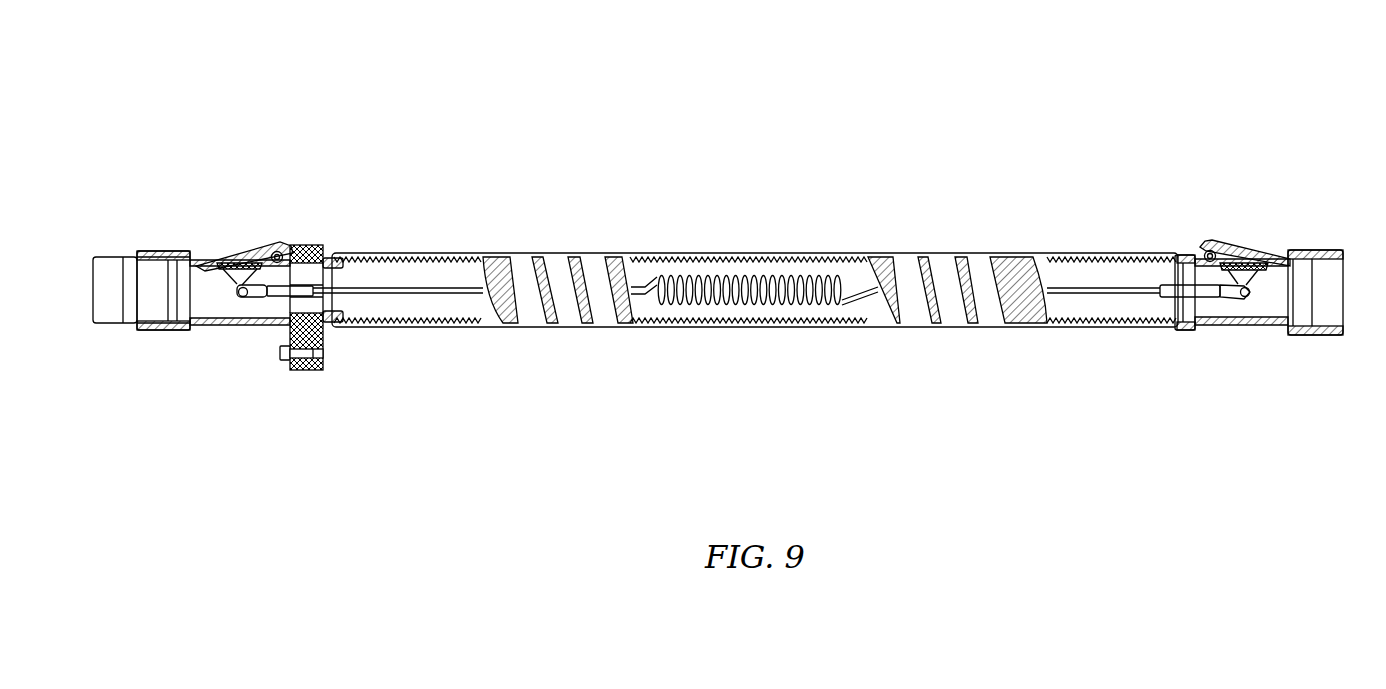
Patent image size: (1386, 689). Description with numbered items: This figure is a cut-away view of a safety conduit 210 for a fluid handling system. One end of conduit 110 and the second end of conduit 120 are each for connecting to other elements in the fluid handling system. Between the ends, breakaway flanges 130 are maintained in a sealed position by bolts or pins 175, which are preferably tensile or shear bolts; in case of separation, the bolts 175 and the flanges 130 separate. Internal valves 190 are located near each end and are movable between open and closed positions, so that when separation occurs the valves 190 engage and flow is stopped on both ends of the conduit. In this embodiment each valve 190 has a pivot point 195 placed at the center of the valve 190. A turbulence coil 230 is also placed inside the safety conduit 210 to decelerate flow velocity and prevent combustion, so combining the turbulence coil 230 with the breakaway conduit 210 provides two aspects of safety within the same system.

The safety conduit 210 is at (715, 138).
The second end of conduit 120 is at (158, 250).
The breakaway flanges 130 is at (321, 243).
The internal valves 190 is at (236, 284).
The bolts or pins 175 is at (295, 358).
The turbulence coil 230 is at (760, 290).
The pivot point 195 is at (1240, 296).
The one end of conduit 110 is at (1315, 246).